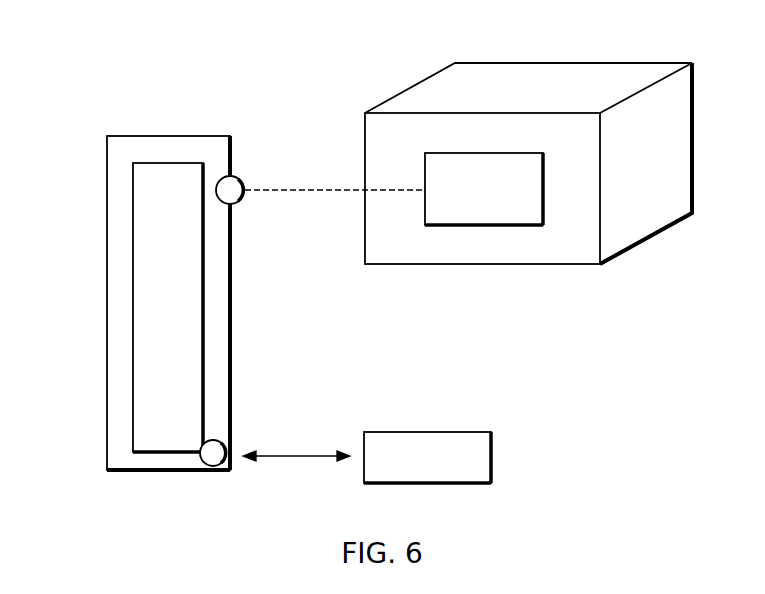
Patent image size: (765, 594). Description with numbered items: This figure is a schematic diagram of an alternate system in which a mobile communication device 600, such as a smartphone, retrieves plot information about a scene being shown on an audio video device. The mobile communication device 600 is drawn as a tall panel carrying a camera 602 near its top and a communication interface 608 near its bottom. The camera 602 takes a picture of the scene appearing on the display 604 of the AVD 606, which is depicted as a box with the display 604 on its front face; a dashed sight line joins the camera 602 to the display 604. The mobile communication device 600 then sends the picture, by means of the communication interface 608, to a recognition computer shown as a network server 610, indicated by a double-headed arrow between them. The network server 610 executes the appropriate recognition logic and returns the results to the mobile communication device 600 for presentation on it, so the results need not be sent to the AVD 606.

The mobile communication device 600 is at (107, 302).
The camera 602 is at (243, 178).
The display 604 is at (543, 190).
The AVD 606 is at (365, 150).
The communication interface 608 is at (200, 463).
The network server 610 is at (491, 458).